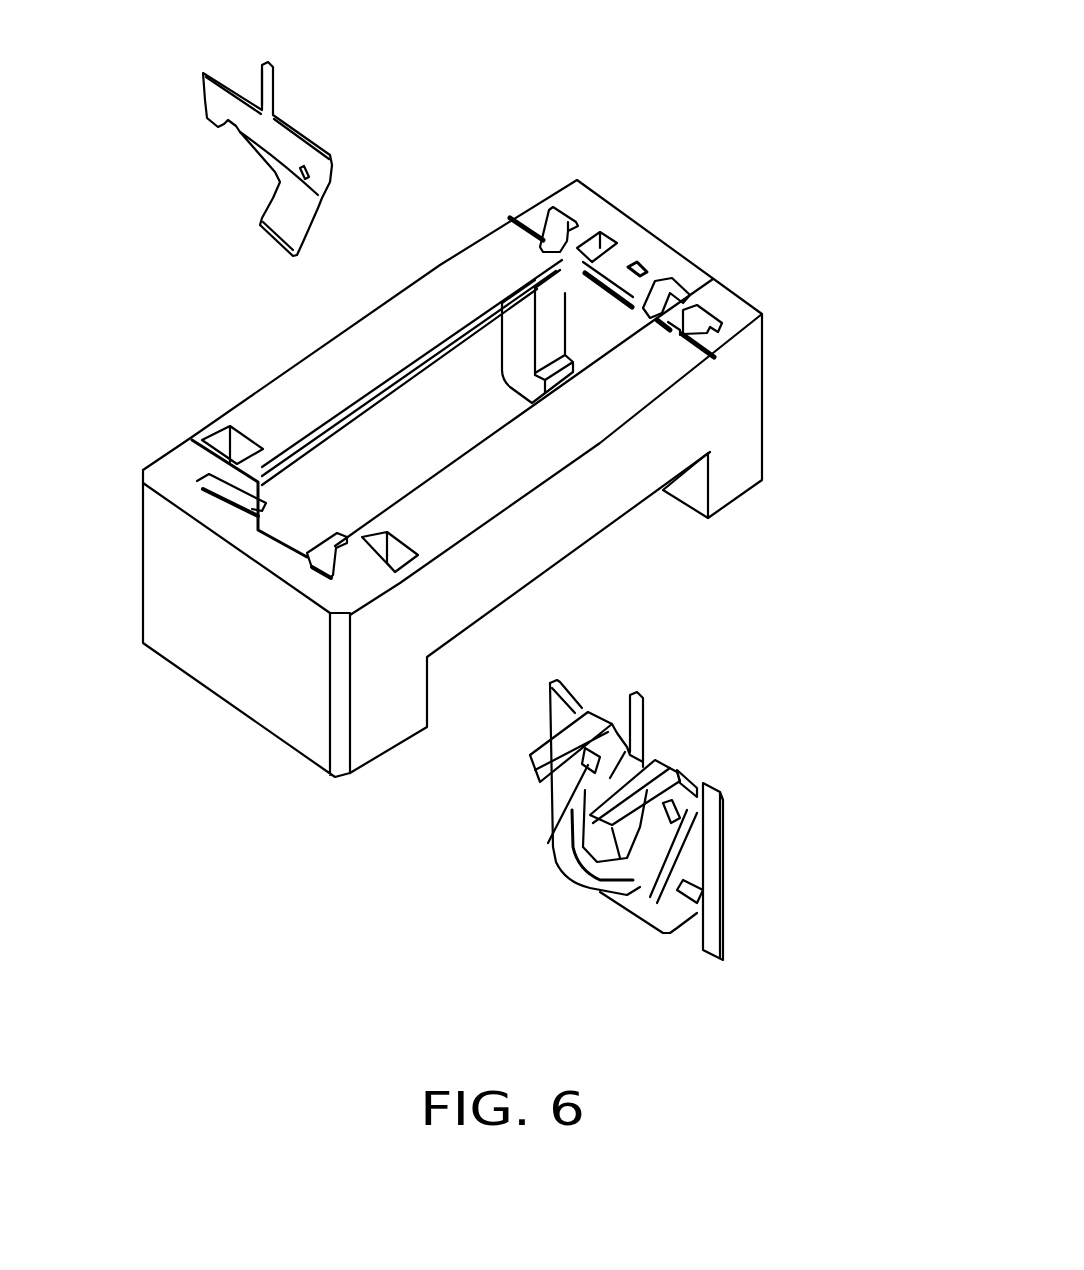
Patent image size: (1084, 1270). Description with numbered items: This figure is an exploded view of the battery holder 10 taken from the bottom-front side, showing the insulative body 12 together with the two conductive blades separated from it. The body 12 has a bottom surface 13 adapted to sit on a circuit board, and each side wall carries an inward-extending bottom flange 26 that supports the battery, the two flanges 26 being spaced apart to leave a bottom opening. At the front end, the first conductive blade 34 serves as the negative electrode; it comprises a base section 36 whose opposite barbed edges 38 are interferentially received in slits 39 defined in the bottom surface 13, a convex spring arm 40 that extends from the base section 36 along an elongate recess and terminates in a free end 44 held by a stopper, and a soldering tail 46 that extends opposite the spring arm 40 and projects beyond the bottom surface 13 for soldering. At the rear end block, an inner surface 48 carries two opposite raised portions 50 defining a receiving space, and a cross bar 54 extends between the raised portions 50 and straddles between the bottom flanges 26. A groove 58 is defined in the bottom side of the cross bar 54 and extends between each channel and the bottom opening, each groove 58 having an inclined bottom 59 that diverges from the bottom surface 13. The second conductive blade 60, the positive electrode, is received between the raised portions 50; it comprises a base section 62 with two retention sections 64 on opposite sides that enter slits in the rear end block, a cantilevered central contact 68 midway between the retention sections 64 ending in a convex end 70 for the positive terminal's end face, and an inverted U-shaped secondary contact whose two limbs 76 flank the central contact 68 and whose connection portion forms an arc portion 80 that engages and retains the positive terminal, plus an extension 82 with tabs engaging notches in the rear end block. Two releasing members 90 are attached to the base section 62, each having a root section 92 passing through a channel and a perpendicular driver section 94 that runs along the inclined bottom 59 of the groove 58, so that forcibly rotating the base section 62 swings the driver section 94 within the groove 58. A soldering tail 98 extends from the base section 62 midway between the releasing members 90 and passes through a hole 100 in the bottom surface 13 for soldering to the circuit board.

The battery holder 10 is at (578, 16).
The body 12 is at (372, 768).
The bottom surface 13 is at (542, 202).
The bottom flange 26 is at (320, 395).
The first conductive blade 34 is at (322, 108).
The base section 36 is at (280, 142).
The barbed edge 38 is at (316, 178).
The slit 39 is at (205, 487).
The spring arm 40 is at (297, 210).
The free end 44 is at (277, 240).
The soldering tail 46 is at (277, 85).
The inner surface 48 is at (585, 340).
The raised portion 50 is at (520, 338).
The cross bar 54 is at (607, 313).
The groove 58 is at (577, 235).
The inclined bottom 59 is at (636, 258).
The second conductive blade 60 is at (647, 947).
The base section 62 is at (610, 750).
The retention section 64 is at (715, 918).
The central contact 68 is at (628, 823).
The convex end 70 is at (657, 875).
The limb 76 is at (560, 823).
The arc portion 80 is at (607, 907).
The extension 82 is at (670, 915).
The releasing member 90 is at (520, 782).
The root section 92 is at (608, 712).
The driver section 94 is at (536, 760).
The soldering tail 98 is at (643, 702).
The hole 100 is at (650, 268).